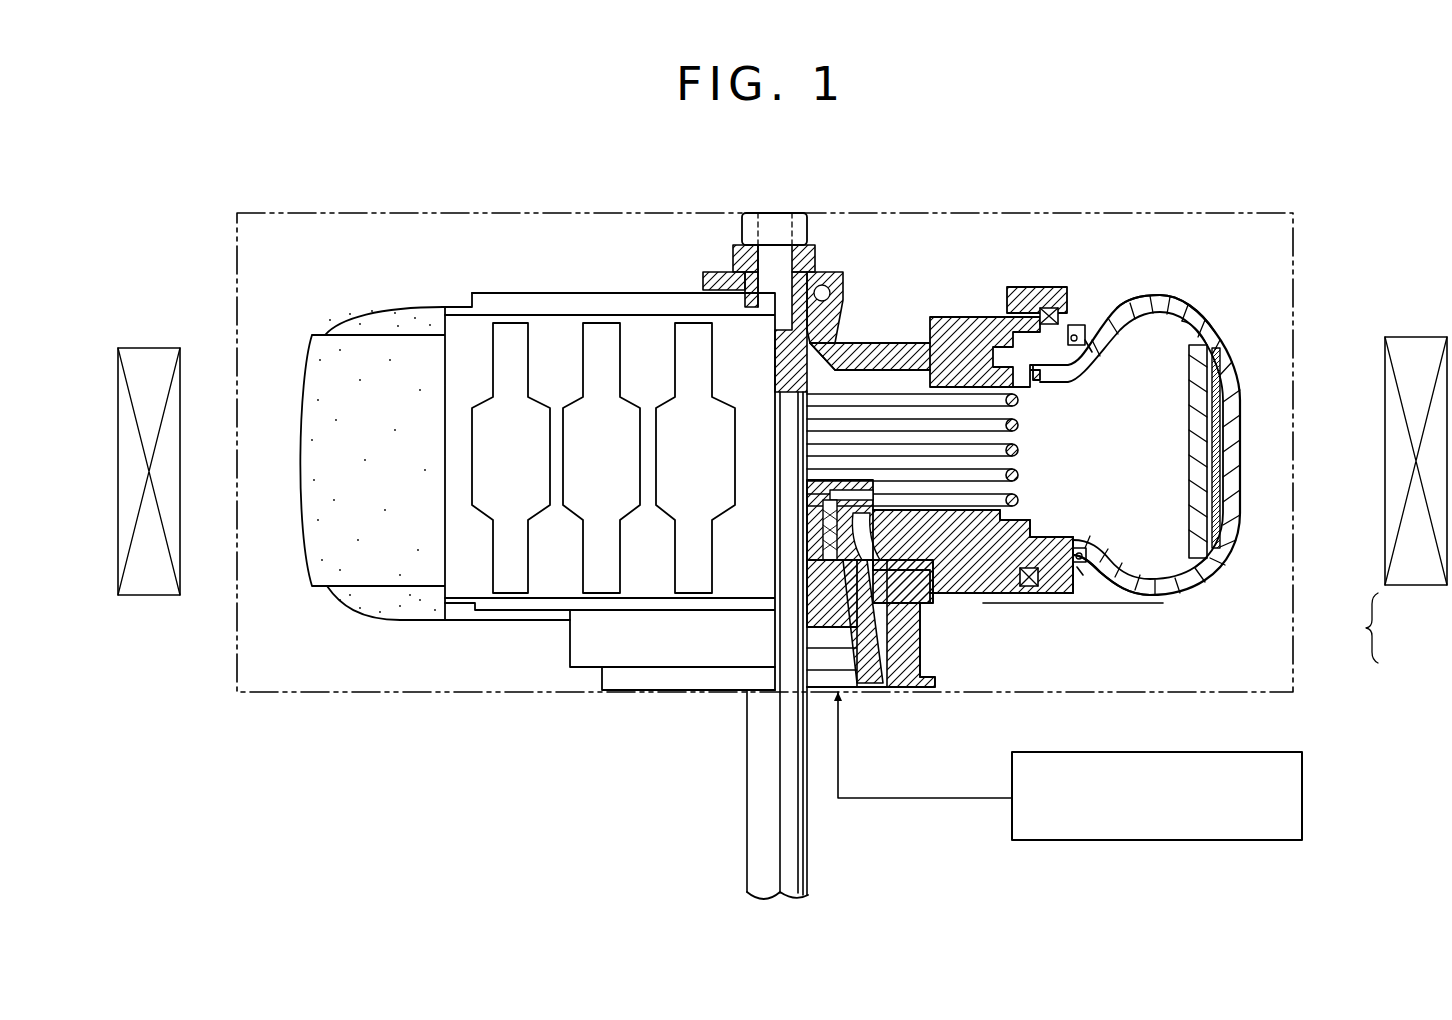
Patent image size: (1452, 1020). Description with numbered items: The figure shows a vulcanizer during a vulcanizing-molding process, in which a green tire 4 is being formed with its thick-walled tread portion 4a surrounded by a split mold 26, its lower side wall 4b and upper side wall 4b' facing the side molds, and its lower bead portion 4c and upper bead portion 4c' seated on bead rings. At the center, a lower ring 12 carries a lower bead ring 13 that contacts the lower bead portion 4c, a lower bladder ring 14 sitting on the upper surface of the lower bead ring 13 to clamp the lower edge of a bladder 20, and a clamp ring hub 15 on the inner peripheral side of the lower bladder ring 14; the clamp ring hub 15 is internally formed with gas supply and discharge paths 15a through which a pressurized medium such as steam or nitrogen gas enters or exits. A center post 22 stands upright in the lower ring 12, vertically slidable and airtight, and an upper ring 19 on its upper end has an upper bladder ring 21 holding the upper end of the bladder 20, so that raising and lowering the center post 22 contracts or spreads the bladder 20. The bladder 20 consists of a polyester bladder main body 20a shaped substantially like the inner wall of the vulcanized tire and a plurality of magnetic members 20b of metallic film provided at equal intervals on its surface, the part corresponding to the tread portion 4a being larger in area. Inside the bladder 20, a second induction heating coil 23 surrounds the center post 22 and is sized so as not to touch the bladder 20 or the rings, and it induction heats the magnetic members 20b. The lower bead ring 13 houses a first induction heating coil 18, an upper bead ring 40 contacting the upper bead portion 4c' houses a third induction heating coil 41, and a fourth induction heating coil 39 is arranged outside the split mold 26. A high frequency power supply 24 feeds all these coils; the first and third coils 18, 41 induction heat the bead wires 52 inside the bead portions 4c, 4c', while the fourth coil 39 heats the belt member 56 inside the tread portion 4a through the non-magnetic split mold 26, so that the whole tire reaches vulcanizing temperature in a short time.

The green tire 4 is at (1205, 305).
The tread portion 4a is at (1242, 370).
The lower side wall 4b is at (1133, 610).
The upper side wall 4b' is at (1183, 286).
The lower bead portion 4c is at (1106, 529).
The upper bead portion 4c' is at (1102, 289).
The lower ring 12 is at (700, 692).
The lower bead ring 13 is at (1068, 595).
The lower bladder ring 14 is at (965, 533).
The clamp ring hub 15 is at (867, 663).
The gas supply and discharge path 15a is at (895, 655).
The first induction heating coil 18 is at (1030, 592).
The upper ring 19 is at (875, 340).
The bladder 20 is at (669, 312).
The bladder main body 20a is at (463, 347).
The magnetic member 20b is at (683, 342).
The upper bladder ring 21 is at (907, 357).
The center post 22 is at (758, 840).
The second induction heating coil 23 is at (1022, 437).
The high frequency power supply 24 is at (1285, 822).
The split mold 26 is at (922, 212).
The fourth induction heating coil 39 is at (1405, 350).
The upper bead ring 40 is at (1022, 290).
The third induction heating coil 41 is at (1055, 307).
The bead wire 52 is at (1092, 320).
The belt member 56 is at (1222, 420).